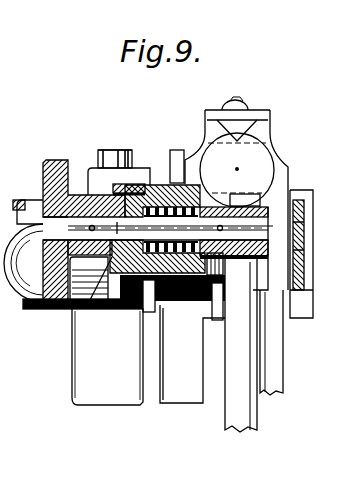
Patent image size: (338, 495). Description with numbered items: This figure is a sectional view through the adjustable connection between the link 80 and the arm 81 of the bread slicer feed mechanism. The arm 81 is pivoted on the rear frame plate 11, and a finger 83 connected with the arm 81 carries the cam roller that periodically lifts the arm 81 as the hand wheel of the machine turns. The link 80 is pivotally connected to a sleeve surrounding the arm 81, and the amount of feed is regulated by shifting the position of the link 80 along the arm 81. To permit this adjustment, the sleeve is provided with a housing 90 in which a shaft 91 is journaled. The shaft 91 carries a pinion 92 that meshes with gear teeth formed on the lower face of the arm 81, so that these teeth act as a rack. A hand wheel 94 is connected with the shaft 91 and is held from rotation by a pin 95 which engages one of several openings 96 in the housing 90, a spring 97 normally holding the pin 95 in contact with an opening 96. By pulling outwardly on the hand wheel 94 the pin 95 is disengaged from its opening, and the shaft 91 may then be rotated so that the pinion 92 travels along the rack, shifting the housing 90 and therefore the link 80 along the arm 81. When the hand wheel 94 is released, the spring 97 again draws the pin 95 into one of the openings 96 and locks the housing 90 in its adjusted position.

The rear frame plate 11 is at (120, 382).
The link 80 is at (246, 420).
The arm 81 is at (248, 170).
The finger 83 is at (282, 172).
The housing 90 is at (185, 180).
The shaft 91 is at (138, 310).
The pinion 92 is at (247, 262).
The hand wheel 94 is at (58, 160).
The pin 95 is at (135, 184).
The openings 96 is at (157, 185).
The spring 97 is at (169, 306).